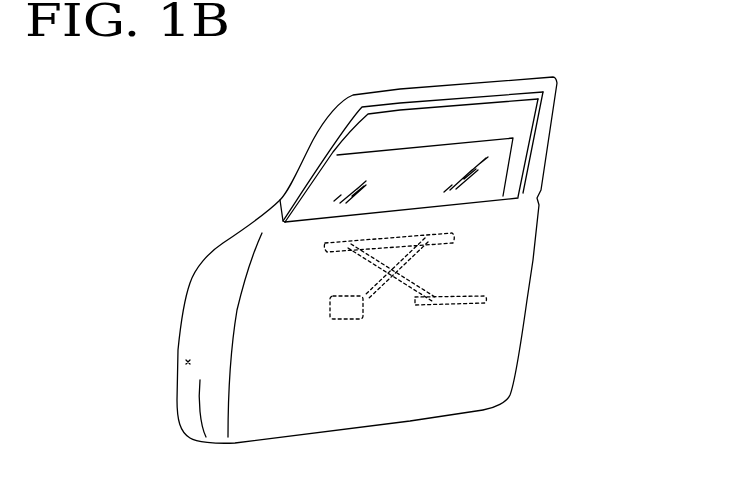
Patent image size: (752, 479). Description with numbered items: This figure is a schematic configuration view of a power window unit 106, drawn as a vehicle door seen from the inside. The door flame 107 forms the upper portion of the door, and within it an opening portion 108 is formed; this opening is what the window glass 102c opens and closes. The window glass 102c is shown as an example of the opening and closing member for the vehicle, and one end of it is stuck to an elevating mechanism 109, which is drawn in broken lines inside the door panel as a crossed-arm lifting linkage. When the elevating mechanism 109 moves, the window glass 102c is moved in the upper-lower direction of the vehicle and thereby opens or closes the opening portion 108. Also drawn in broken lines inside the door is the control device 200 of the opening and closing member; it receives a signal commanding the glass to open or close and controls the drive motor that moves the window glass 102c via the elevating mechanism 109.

The power window unit 106 is at (275, 96).
The door flame 107 is at (558, 84).
The opening portion 108 is at (376, 126).
The window glass 102c is at (317, 203).
The elevating mechanism 109 is at (403, 318).
The control device 200 is at (329, 299).